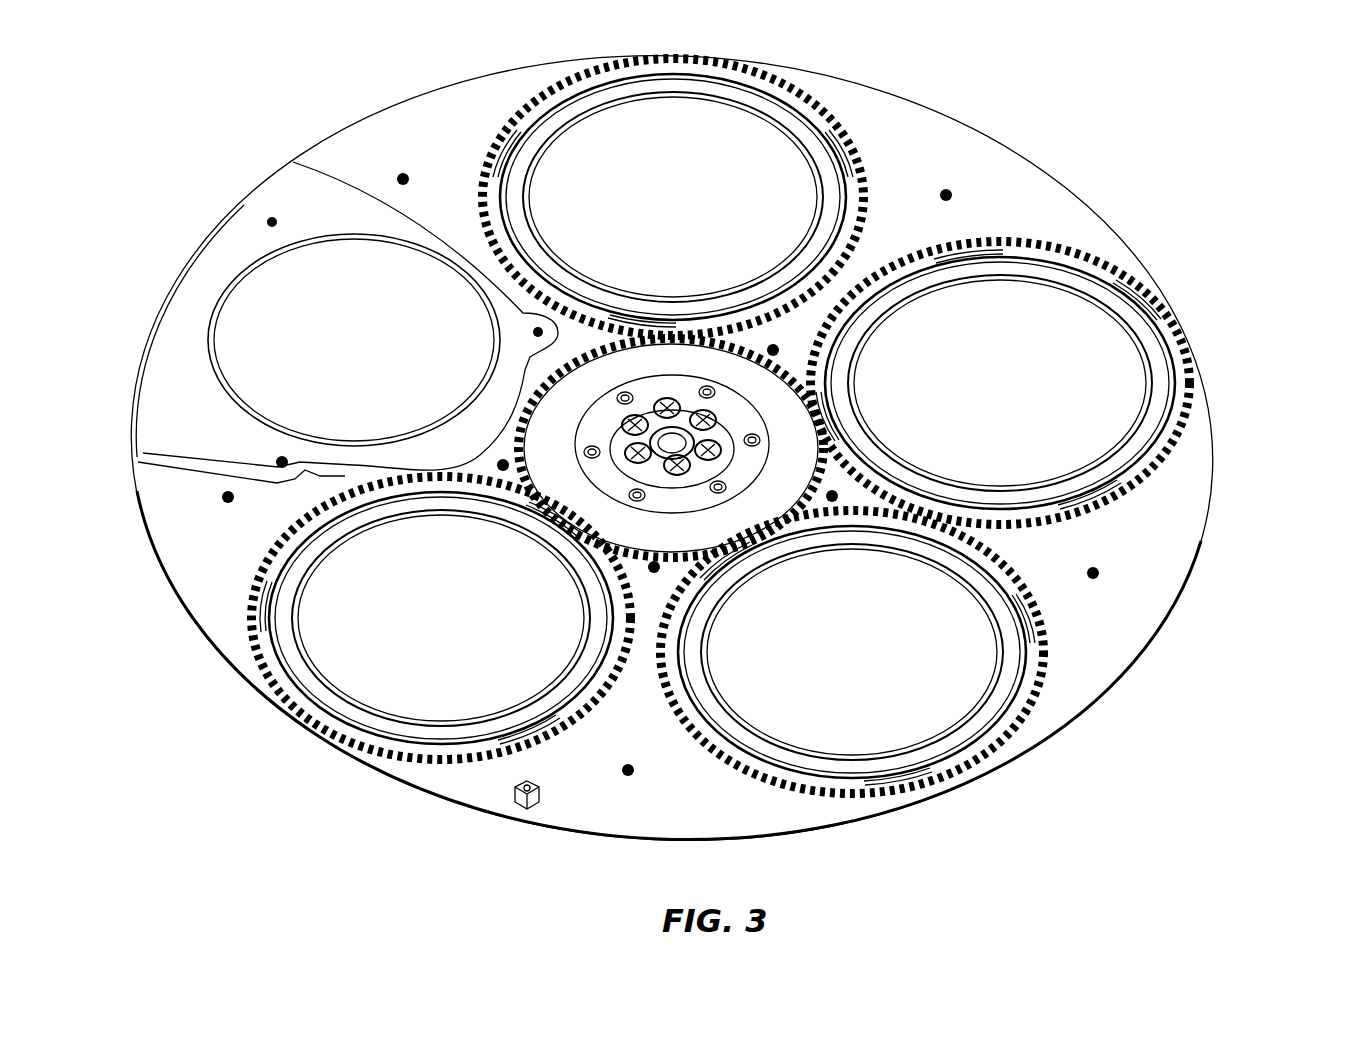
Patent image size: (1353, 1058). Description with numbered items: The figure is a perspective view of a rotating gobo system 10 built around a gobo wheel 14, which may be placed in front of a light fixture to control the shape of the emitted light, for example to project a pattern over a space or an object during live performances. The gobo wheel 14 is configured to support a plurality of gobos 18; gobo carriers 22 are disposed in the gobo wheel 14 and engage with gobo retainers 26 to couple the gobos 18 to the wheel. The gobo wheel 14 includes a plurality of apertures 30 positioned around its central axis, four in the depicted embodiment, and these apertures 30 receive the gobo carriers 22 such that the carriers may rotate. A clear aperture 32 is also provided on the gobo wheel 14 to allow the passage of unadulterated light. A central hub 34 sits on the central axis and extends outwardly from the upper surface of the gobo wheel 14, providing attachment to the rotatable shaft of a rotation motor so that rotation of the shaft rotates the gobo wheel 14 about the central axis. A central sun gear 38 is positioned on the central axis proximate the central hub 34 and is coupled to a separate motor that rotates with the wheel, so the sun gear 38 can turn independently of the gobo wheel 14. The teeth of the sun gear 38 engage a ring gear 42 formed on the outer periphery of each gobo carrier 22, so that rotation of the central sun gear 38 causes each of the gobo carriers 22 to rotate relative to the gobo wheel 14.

The rotating gobo system 10 is at (198, 167).
The gobo wheel 14 is at (1000, 188).
The gobos 18 is at (1072, 385).
The gobo carriers 22 is at (1170, 412).
The gobo retainers 26 is at (1135, 327).
The apertures 30 is at (1118, 500).
The clear aperture 32 is at (258, 383).
The central hub 34 is at (742, 417).
The central sun gear 38 is at (653, 358).
The ring gear 42 is at (1167, 468).